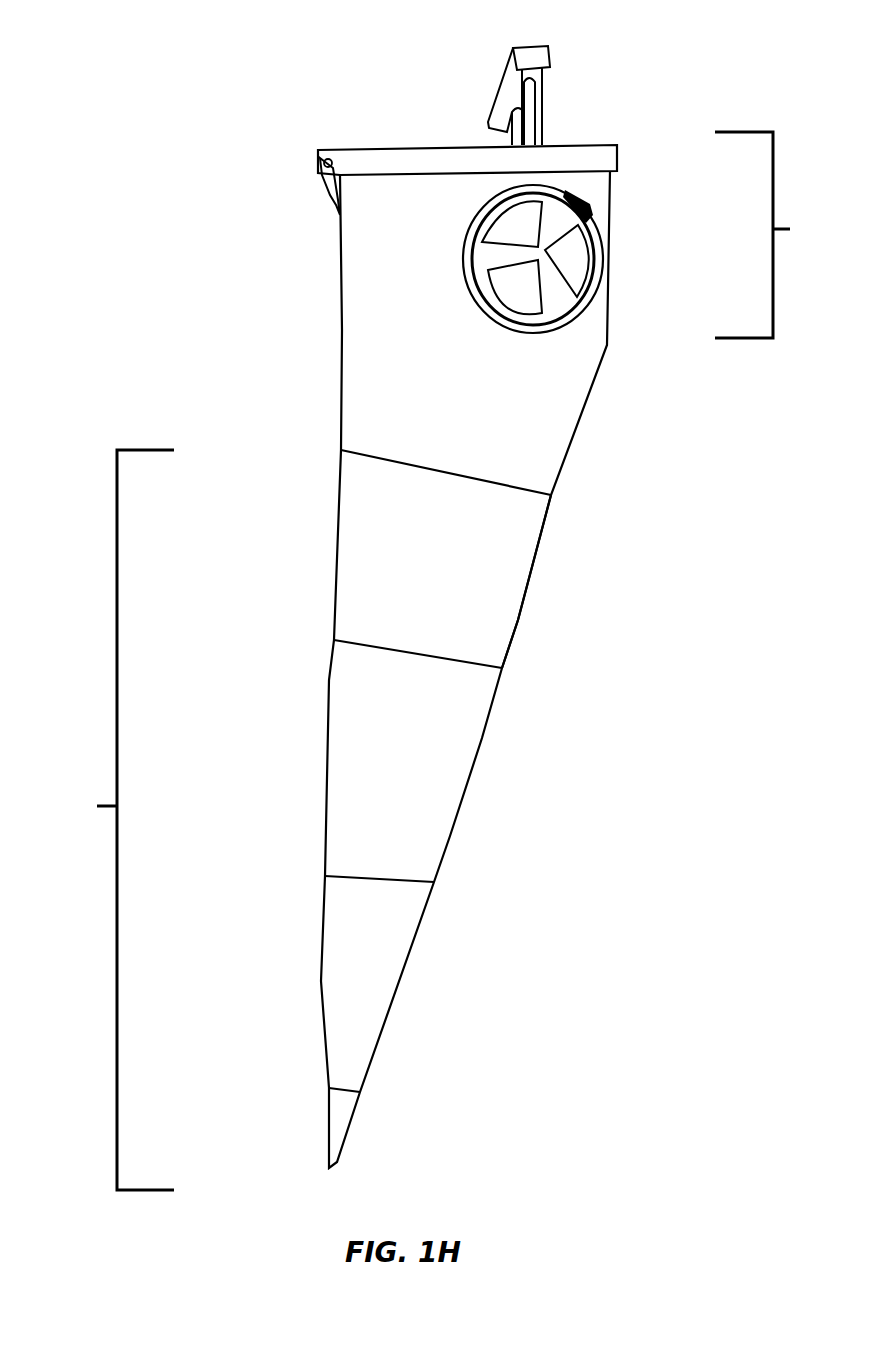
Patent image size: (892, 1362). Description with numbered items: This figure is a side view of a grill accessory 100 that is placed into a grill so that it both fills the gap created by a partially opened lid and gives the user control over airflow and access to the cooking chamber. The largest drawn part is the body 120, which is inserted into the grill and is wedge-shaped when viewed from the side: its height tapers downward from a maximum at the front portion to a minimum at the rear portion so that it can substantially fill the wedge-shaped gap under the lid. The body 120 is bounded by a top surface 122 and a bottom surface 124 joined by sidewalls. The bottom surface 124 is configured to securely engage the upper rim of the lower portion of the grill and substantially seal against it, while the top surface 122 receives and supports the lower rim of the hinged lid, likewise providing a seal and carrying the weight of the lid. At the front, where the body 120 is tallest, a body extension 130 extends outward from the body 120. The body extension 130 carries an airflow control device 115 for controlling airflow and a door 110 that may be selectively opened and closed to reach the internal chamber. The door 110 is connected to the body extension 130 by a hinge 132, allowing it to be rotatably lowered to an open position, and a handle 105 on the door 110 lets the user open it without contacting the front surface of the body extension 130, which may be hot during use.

The grill accessory 100 is at (180, 86).
The handle 105 is at (537, 58).
The door 110 is at (418, 145).
The airflow control device 115 is at (610, 272).
The body 120 is at (108, 820).
The top surface 122 is at (572, 526).
The bottom surface 124 is at (308, 528).
The body extension 130 is at (777, 235).
The hinge 132 is at (315, 160).